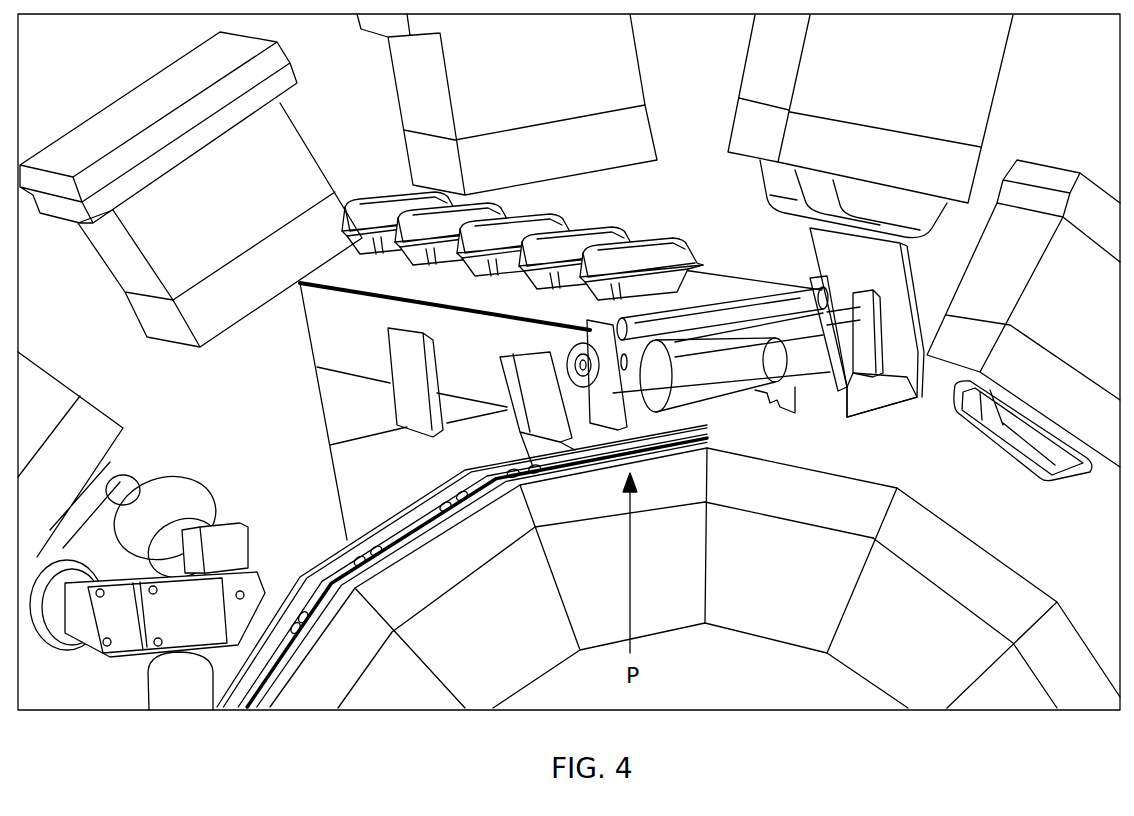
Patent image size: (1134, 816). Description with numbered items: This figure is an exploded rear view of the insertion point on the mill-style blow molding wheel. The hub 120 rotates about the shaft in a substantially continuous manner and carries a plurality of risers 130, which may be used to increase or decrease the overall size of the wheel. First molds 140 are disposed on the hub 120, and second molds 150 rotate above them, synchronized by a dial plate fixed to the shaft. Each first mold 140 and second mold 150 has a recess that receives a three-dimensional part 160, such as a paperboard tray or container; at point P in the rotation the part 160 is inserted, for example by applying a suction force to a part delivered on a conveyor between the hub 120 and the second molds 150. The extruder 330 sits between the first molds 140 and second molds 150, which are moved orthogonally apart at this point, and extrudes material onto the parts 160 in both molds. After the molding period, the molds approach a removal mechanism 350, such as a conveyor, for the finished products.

The hub 120 is at (848, 705).
The riser 130 is at (797, 625).
The first mold 140 is at (327, 560).
The second mold 150 is at (1107, 443).
The three-dimensional part 160 is at (990, 478).
The extruder 330 is at (173, 490).
The removal mechanism 350 is at (853, 340).